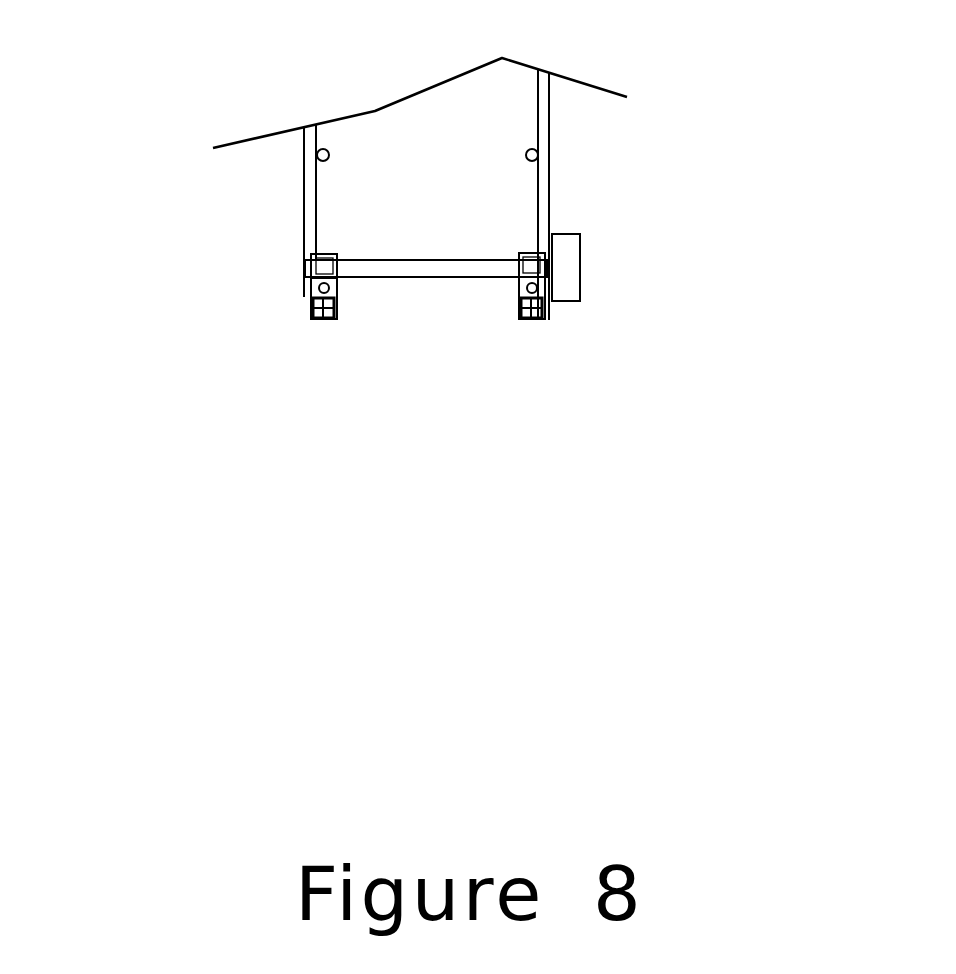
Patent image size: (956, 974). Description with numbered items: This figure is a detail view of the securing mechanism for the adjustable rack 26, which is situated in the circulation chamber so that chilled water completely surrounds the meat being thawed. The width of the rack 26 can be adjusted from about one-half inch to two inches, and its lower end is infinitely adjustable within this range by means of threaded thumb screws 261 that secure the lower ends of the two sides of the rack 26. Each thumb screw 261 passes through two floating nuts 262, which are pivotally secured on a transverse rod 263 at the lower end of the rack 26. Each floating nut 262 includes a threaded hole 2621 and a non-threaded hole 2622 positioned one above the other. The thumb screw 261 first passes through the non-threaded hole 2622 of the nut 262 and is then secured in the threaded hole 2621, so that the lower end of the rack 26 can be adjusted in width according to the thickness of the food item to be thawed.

The rack 26 is at (540, 161).
The thumb screw 261 is at (575, 255).
The floating nut 262 is at (277, 375).
The threaded hole 2621 is at (406, 309).
The non-threaded hole 2622 is at (399, 224).
The transverse rod 263 is at (520, 303).